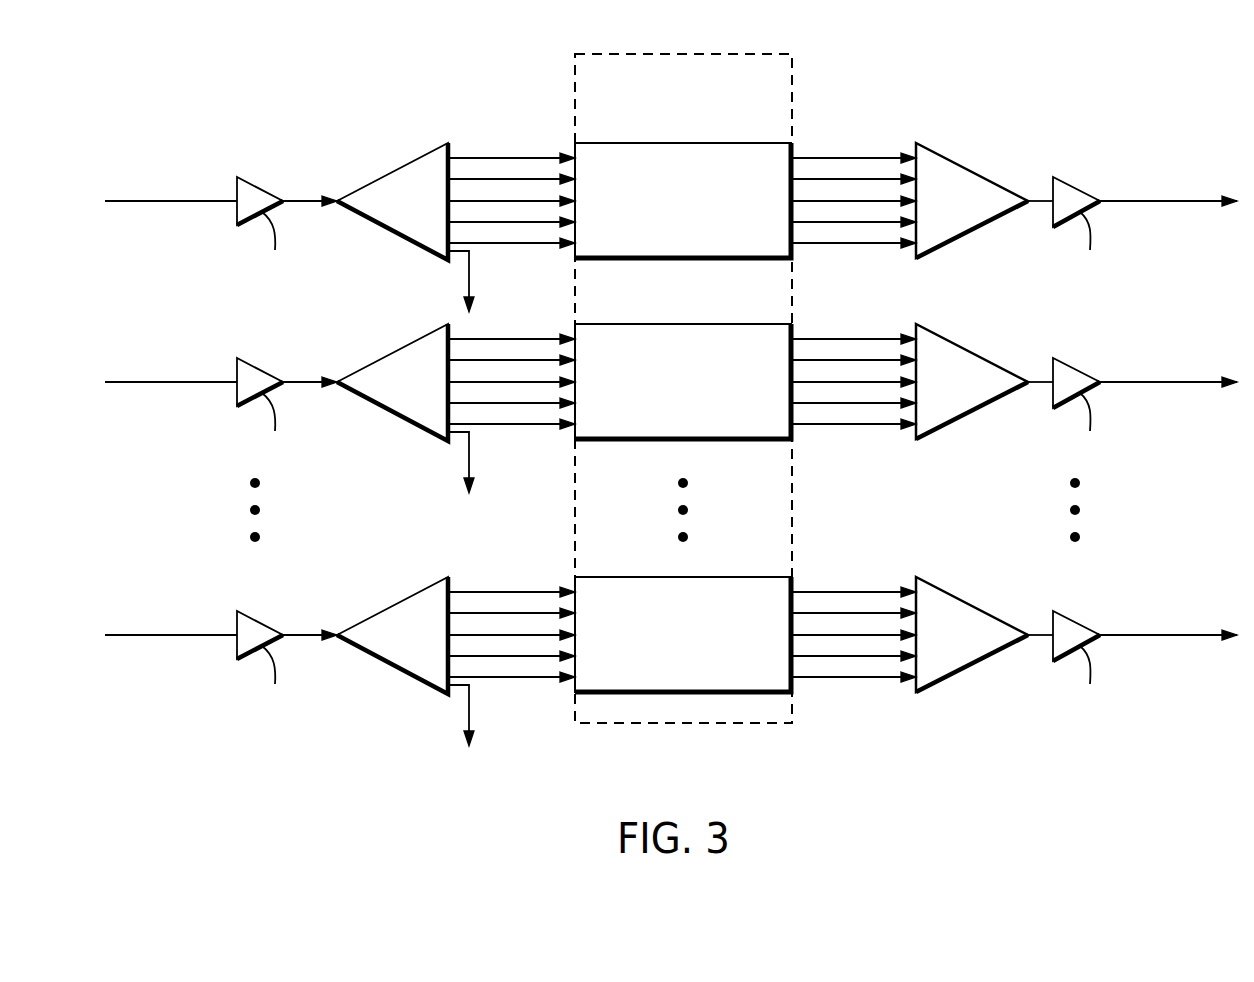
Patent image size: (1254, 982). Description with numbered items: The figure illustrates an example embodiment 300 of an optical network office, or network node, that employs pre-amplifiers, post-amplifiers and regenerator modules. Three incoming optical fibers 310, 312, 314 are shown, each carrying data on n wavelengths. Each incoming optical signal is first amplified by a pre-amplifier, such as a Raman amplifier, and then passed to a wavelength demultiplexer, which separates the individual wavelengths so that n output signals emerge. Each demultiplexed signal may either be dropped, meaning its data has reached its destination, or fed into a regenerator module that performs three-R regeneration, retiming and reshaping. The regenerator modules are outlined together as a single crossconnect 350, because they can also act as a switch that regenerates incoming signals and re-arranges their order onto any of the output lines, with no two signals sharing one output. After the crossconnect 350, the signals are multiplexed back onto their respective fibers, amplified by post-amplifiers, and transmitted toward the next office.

The example embodiment 300 is at (671, 391).
The incoming optical fiber 310 is at (136, 204).
The incoming optical fiber 312 is at (171, 391).
The incoming optical fiber 314 is at (171, 644).
The crossconnect 350 is at (698, 126).